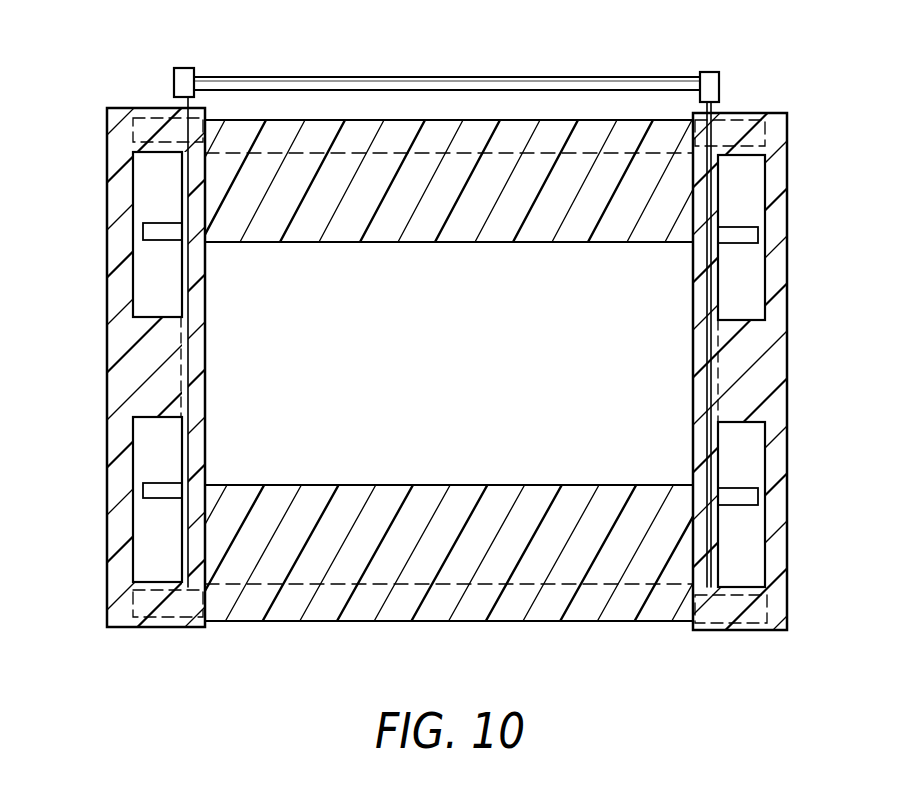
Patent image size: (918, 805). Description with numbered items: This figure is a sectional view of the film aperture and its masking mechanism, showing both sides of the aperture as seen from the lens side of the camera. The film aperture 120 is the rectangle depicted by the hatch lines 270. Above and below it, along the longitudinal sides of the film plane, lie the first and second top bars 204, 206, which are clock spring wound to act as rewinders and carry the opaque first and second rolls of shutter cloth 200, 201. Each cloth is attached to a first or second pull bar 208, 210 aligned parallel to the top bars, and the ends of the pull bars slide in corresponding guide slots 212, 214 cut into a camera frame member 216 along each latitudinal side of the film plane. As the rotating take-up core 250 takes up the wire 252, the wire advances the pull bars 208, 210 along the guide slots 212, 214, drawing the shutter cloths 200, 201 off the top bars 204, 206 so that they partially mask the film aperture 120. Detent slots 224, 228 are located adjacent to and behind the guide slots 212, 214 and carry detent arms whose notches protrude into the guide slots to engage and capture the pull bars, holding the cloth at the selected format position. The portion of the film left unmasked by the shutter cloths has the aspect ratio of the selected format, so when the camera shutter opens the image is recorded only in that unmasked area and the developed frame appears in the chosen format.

The film aperture 120 is at (457, 165).
The first roll of shutter cloth 200 is at (313, 242).
The second roll of shutter cloth 201 is at (302, 485).
The first top bar 204 is at (107, 130).
The second top bar 206 is at (135, 600).
The first pull bar 208 is at (140, 232).
The second pull bar 210 is at (140, 493).
The guide slot 212 is at (140, 190).
The guide slot 214 is at (140, 521).
The camera frame member 216 is at (100, 378).
The detent slot 224 is at (128, 280).
The detent slot 228 is at (132, 466).
The take-up core 250 is at (720, 85).
The wire 252 is at (207, 340).
The hatch lines 270 is at (350, 155).